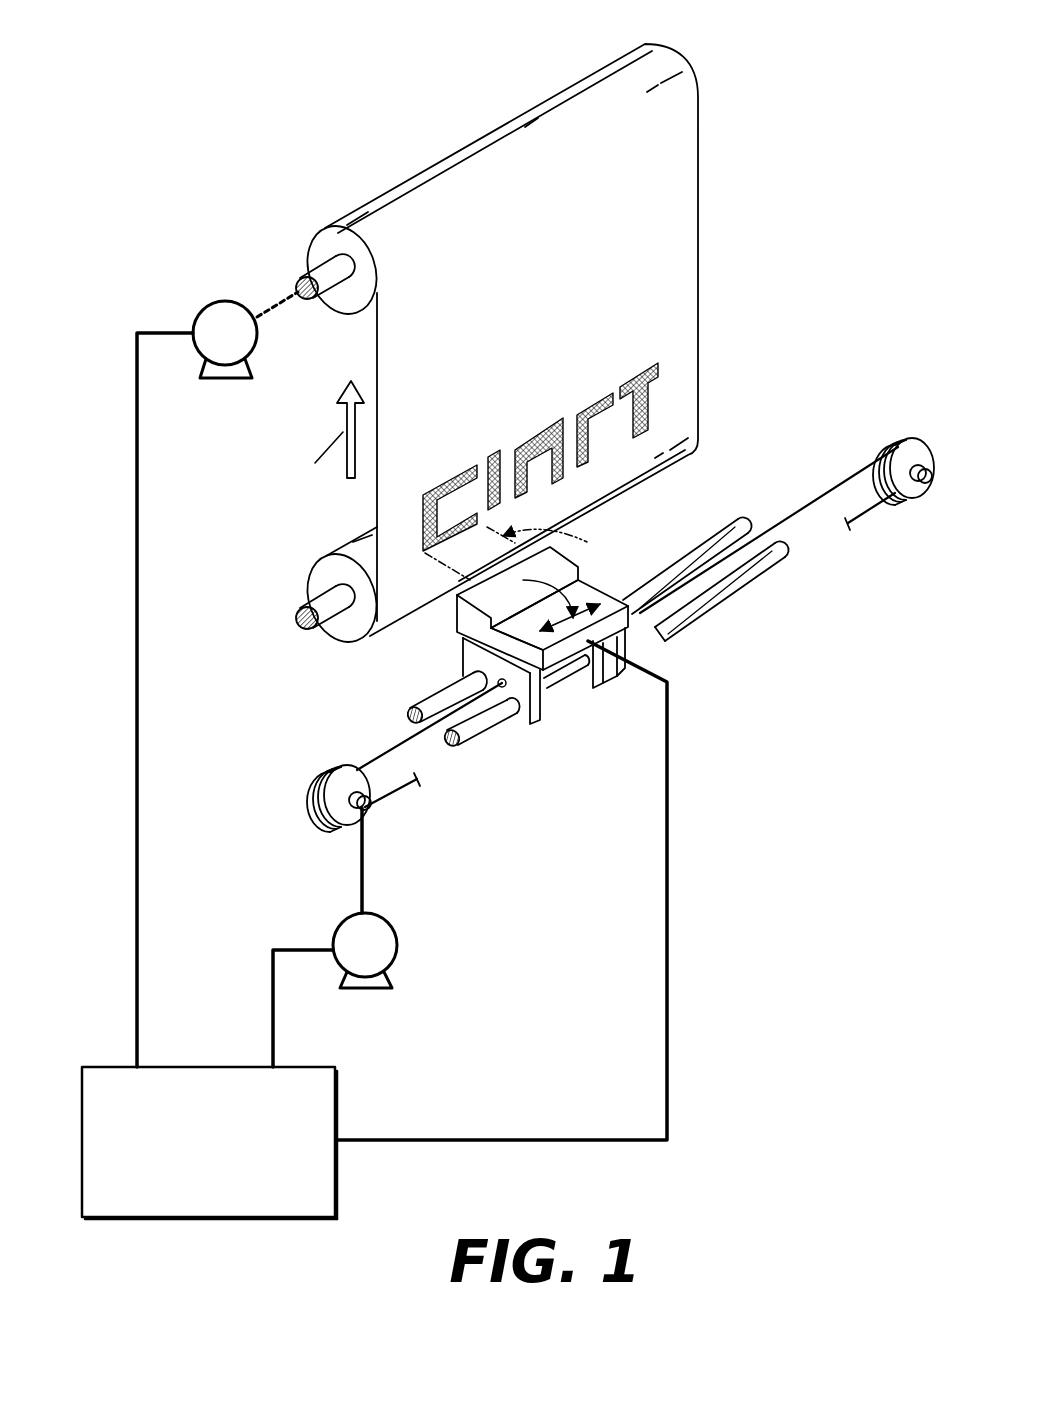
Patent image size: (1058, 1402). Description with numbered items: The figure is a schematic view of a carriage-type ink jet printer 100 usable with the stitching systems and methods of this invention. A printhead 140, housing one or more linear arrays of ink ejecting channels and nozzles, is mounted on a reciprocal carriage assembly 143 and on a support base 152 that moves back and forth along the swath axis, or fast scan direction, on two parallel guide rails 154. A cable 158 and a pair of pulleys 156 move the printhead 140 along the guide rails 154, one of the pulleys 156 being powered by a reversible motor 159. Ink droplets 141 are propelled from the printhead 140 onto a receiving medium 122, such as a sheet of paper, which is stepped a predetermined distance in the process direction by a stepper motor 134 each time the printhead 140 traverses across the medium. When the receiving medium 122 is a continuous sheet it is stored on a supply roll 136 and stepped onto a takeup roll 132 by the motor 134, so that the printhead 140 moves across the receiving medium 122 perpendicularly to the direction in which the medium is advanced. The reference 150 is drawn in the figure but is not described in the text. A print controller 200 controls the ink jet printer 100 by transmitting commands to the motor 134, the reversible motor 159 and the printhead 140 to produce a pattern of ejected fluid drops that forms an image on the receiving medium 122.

The ink jet printer 100 is at (815, 397).
The receiving medium 122 is at (699, 170).
The takeup roll 132 is at (313, 238).
The motor 134 is at (217, 302).
The supply roll 136 is at (315, 572).
The printhead 140 is at (621, 570).
The ink droplets 141 is at (572, 544).
The carriage assembly 143 is at (620, 627).
The printhead assembly 150 is at (313, 680).
The support base 152 is at (465, 665).
The guide rails 154 is at (480, 727).
The pulleys 156 is at (877, 448).
The cable 158 is at (403, 741).
The reversible motor 159 is at (342, 922).
The print controller 200 is at (208, 1065).